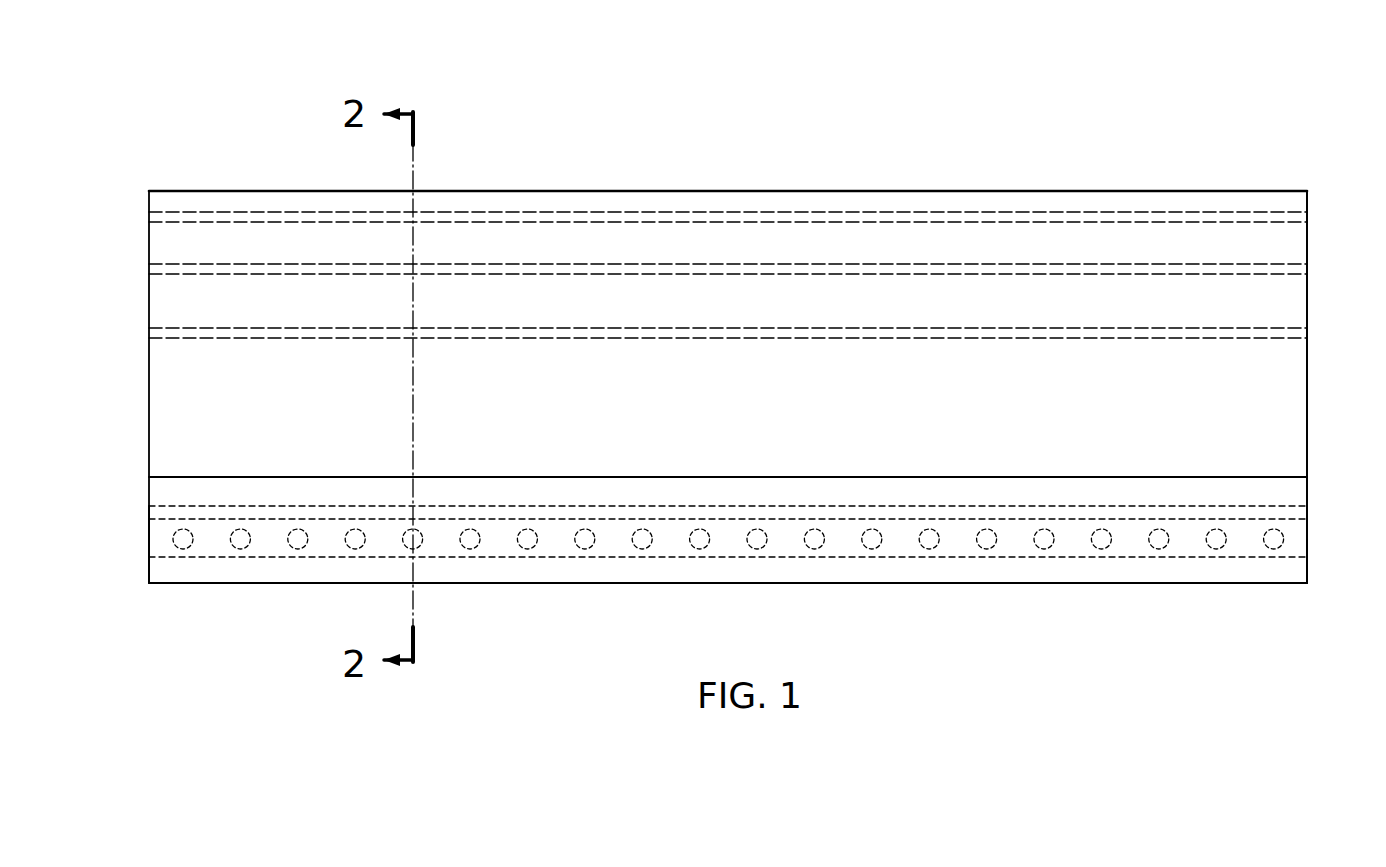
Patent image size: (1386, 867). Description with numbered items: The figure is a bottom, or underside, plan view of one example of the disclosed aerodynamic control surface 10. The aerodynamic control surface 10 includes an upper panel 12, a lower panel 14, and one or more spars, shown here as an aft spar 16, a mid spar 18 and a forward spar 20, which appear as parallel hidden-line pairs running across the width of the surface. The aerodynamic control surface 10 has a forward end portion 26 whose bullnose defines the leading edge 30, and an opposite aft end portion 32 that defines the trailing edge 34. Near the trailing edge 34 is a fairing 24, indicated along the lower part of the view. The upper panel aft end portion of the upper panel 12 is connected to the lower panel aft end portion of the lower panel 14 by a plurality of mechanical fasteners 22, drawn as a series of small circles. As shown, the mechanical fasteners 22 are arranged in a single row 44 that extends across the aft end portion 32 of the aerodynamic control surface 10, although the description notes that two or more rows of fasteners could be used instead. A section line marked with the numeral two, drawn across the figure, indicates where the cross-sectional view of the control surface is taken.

The aerodynamic control surface 10 is at (1152, 106).
The upper panel 12 is at (1288, 566).
The lower panel 14 is at (1288, 421).
The aft spar 16 is at (889, 337).
The mid spar 18 is at (838, 268).
The forward spar 20 is at (746, 218).
The mechanical fasteners 22 is at (240, 550).
The fairing 24 is at (1288, 489).
The forward end portion 26 is at (1300, 171).
The leading edge 30 is at (605, 191).
The aft end portion 32 is at (1310, 600).
The trailing edge 34 is at (870, 583).
The single row 44 is at (156, 545).